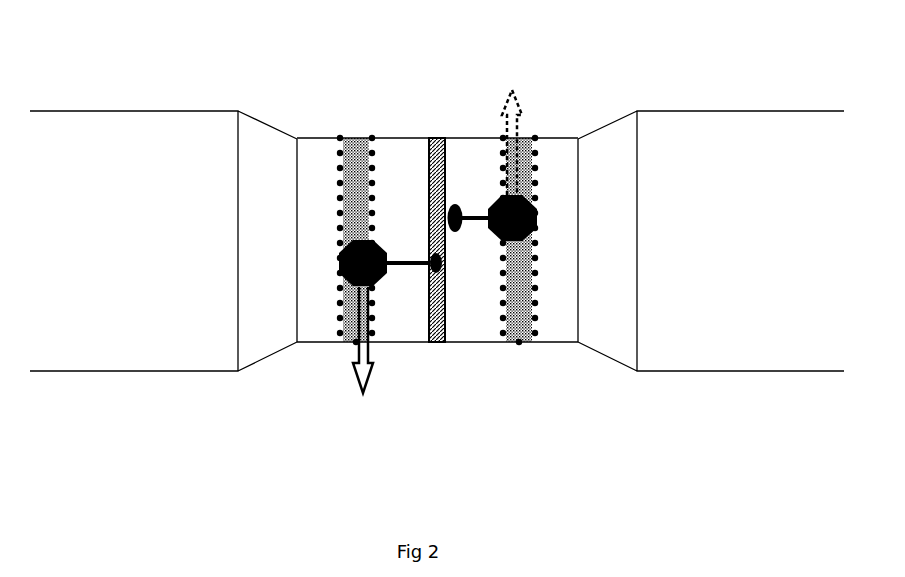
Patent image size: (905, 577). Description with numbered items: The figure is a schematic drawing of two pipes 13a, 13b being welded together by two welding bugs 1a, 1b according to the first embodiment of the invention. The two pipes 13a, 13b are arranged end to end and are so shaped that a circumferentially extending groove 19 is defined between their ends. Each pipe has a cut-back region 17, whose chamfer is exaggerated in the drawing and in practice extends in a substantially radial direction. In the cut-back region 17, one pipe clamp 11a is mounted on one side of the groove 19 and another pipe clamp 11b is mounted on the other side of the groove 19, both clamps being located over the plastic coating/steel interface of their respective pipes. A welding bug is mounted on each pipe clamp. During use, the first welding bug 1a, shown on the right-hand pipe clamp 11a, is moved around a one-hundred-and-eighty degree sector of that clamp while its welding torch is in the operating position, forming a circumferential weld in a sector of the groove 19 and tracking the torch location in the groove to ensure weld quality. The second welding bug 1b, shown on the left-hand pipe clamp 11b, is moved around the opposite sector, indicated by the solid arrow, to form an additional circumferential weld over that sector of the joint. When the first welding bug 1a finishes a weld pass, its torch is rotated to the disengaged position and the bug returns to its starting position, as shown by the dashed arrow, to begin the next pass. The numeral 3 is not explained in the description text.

The first welding bug 1a is at (500, 192).
The second welding bug 1b is at (350, 247).
The valve 3 is at (458, 190).
The pipe clamp 11a is at (521, 308).
The pipe clamp 11b is at (372, 118).
The pipe 13a is at (684, 299).
The pipe 13b is at (115, 314).
The cut-back region 17 is at (477, 350).
The circumferentially extending groove 19 is at (436, 352).